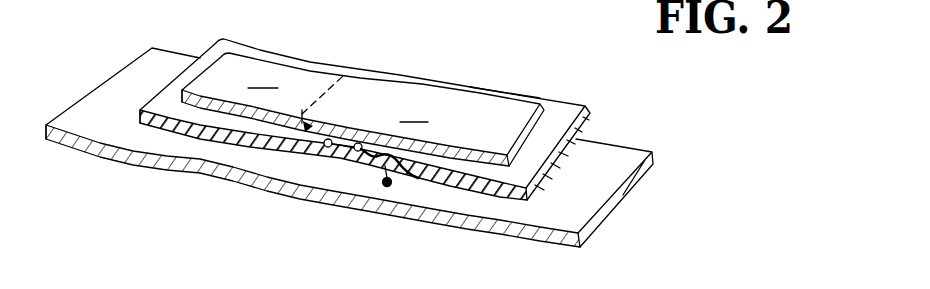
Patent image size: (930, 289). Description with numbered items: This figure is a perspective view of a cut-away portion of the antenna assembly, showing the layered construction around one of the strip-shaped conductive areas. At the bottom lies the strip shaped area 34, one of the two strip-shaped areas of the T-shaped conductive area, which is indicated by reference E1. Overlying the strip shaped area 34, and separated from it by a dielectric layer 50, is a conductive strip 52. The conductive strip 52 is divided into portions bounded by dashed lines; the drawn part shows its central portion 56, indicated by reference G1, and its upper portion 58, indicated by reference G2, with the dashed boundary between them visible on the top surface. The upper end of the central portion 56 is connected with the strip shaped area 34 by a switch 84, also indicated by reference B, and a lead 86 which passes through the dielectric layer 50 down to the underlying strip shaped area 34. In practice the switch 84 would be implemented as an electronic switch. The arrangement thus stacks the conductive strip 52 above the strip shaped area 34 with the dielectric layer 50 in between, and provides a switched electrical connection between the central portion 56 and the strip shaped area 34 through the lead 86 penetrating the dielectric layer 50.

The strip shaped area 34 is at (623, 155).
The dielectric layer 50 is at (574, 110).
The conductive strip 52 is at (505, 95).
The central portion 56 is at (422, 82).
The upper portion 58 is at (304, 70).
The switch 84 is at (327, 150).
The lead 86 is at (380, 157).
The strip shaped area reference E1 is at (115, 87).
The central strip portion reference G1 is at (414, 109).
The upper strip portion reference G2 is at (263, 75).
The switch reference B is at (355, 99).